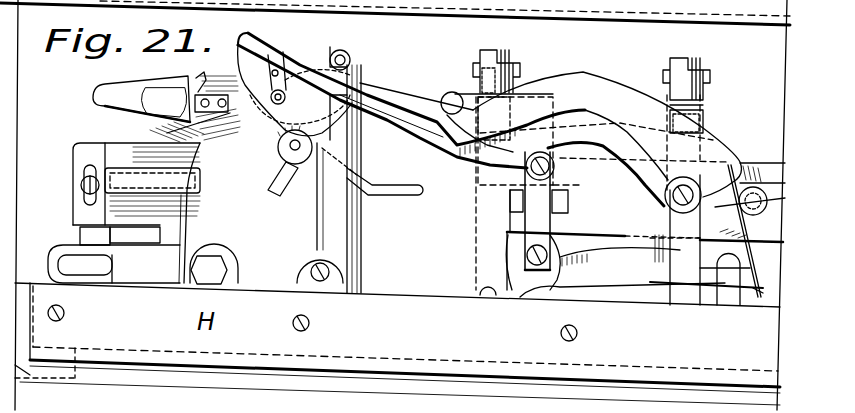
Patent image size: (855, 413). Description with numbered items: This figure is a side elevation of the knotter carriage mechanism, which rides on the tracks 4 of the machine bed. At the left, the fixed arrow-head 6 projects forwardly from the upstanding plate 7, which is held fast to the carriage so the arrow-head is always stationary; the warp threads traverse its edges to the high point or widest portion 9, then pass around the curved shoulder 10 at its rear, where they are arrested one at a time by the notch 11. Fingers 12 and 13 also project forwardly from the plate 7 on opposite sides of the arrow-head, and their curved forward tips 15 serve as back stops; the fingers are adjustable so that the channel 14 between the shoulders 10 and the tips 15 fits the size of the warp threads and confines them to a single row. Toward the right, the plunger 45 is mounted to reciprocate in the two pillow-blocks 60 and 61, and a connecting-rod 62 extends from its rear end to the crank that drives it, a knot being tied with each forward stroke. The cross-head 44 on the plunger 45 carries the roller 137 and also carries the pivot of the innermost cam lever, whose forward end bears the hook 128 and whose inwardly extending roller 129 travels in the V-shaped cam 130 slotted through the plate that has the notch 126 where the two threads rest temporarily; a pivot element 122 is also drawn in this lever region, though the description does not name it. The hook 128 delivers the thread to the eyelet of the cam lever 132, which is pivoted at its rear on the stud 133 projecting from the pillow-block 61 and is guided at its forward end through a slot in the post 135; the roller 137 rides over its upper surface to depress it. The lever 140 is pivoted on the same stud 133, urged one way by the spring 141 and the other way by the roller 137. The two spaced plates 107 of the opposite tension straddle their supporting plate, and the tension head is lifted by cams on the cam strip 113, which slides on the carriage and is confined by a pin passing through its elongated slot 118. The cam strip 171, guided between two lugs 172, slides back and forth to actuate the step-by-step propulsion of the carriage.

The tracks 4 is at (150, 377).
The arrow-head 6 is at (107, 102).
The upstanding plate 7 is at (338, 53).
The high point or widest portion 9 is at (173, 125).
The curved or rounded shoulder 10 is at (203, 66).
The notch 11 is at (180, 108).
The finger 12 is at (254, 37).
The finger 13 is at (254, 60).
The channel 14 is at (175, 150).
The curved forward tips 15 is at (180, 70).
The cross-head 44 is at (537, 198).
The plunger 45 is at (747, 172).
The pillow-block 60 is at (503, 92).
The pillow-block 61 is at (677, 260).
The connecting-rod 62 is at (716, 202).
The spaced plates 107 is at (262, 38).
The cam strip 113 is at (523, 287).
The elongated slot 118 is at (140, 263).
The pivot 122 is at (296, 122).
The notch 126 is at (277, 143).
The hook 128 is at (350, 67).
The roller 129 is at (281, 188).
The V-shaped cam 130 is at (400, 193).
The cam lever 132 is at (587, 123).
The stud 133 is at (603, 228).
The post 135 is at (340, 143).
The roller 137 is at (455, 92).
The lever 140 is at (587, 122).
The spring 141 is at (617, 288).
The cam strip 171 is at (767, 300).
The lugs 172 is at (727, 300).